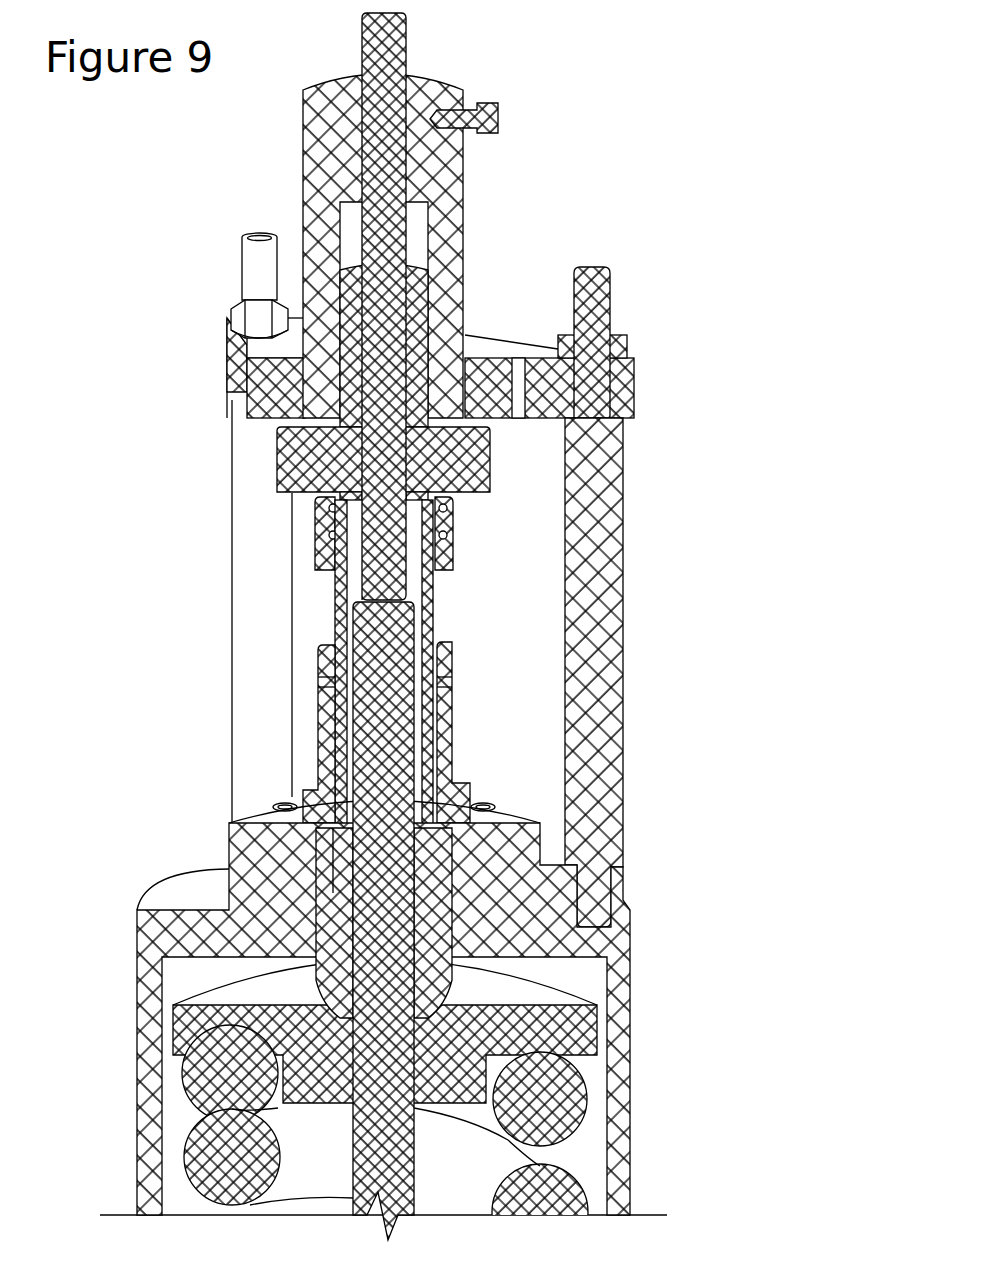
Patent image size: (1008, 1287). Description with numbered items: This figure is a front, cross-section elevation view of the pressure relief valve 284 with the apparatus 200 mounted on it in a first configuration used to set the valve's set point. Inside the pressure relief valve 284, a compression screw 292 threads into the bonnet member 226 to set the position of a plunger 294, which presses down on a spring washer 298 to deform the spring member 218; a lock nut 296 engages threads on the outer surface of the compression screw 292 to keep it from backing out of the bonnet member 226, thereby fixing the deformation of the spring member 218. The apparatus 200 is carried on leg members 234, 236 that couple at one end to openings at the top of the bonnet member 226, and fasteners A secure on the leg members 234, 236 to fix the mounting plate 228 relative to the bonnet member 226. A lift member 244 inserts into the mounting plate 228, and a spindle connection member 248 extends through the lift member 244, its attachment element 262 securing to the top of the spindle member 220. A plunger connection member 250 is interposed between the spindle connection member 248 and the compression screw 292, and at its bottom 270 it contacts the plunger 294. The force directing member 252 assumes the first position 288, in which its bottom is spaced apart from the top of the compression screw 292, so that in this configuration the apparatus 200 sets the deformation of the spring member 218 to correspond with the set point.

The apparatus 200 is at (703, 153).
The lift member 244 is at (475, 206).
The fasteners A is at (238, 310).
The mounting plate 228 is at (636, 383).
The spindle connection member 248 is at (375, 412).
The force directing member 252 is at (455, 520).
The first position 288 is at (467, 528).
The leg member 236 is at (250, 590).
The attachment element 262 is at (405, 592).
The leg member 234 is at (612, 605).
The plunger connection member 250 is at (435, 623).
The bottom 270 is at (453, 698).
The compression screw 292 is at (442, 765).
The spindle member 220 is at (370, 738).
The lock nut 296 is at (452, 797).
The plunger 294 is at (437, 933).
The pressure relief valve 284 is at (782, 1018).
The spring washer 298 is at (578, 1032).
The spring member 218 is at (568, 1102).
The bonnet member 226 is at (623, 1147).